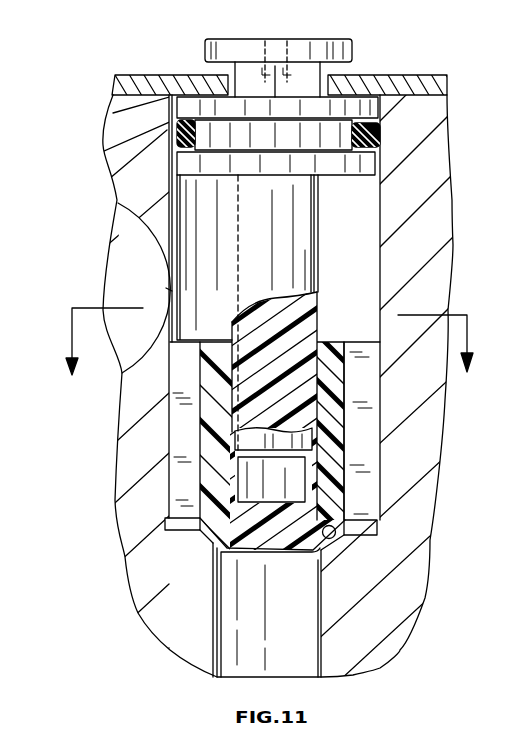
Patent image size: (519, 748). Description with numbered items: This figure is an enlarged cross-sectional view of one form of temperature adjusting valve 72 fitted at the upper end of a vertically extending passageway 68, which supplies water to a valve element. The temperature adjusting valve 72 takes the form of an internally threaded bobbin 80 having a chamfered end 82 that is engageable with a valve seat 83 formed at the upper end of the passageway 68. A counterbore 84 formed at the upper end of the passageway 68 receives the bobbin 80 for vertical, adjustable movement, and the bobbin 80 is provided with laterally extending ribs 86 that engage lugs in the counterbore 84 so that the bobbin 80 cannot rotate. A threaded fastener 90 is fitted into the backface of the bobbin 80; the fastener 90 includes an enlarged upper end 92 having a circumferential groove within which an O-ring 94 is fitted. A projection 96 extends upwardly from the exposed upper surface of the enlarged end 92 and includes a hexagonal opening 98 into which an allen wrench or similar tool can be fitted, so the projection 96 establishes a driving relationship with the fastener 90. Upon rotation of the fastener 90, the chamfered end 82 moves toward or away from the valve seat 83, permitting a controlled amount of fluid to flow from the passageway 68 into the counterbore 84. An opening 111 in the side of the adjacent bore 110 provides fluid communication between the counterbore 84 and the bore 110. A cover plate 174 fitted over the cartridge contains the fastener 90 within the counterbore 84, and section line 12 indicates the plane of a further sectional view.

The section line 12- 12 is at (270, 344).
The passageway 68 is at (298, 621).
The temperature adjusting valve 72 is at (418, 65).
The internally threaded bobbin 80 is at (338, 343).
The chamfered end 82 is at (317, 561).
The valve seat 83 is at (333, 538).
The counterbore 84 is at (385, 237).
The laterally extending ribs 86 is at (372, 396).
The threaded fastener 90 is at (300, 228).
The enlarged upper end 92 is at (362, 169).
The O-ring 94 is at (383, 136).
The projection 96 is at (352, 48).
The hexagonal opening 98 is at (291, 38).
The bore 110 is at (112, 247).
The opening 111 is at (170, 290).
The cover plate 174 is at (447, 88).